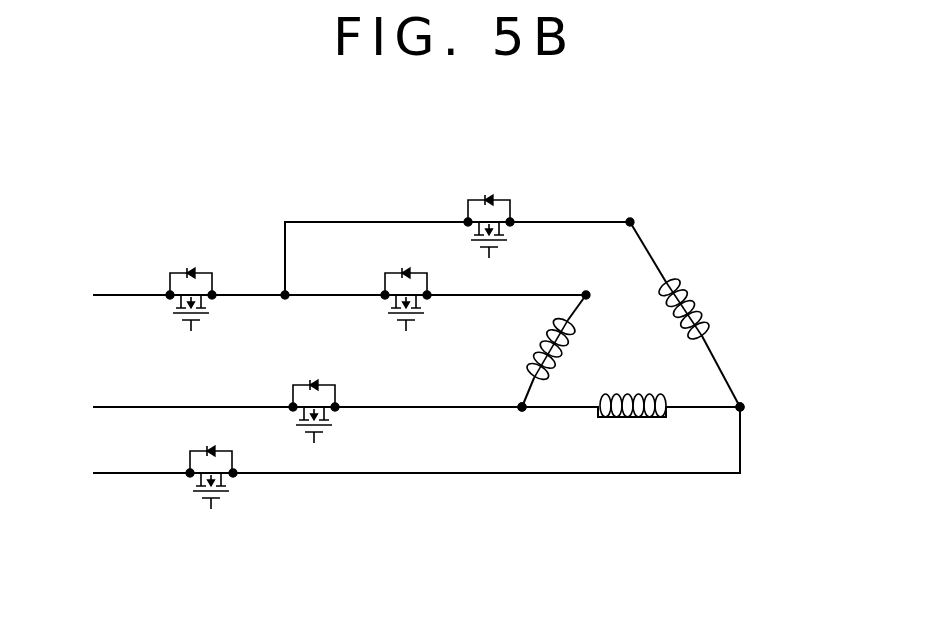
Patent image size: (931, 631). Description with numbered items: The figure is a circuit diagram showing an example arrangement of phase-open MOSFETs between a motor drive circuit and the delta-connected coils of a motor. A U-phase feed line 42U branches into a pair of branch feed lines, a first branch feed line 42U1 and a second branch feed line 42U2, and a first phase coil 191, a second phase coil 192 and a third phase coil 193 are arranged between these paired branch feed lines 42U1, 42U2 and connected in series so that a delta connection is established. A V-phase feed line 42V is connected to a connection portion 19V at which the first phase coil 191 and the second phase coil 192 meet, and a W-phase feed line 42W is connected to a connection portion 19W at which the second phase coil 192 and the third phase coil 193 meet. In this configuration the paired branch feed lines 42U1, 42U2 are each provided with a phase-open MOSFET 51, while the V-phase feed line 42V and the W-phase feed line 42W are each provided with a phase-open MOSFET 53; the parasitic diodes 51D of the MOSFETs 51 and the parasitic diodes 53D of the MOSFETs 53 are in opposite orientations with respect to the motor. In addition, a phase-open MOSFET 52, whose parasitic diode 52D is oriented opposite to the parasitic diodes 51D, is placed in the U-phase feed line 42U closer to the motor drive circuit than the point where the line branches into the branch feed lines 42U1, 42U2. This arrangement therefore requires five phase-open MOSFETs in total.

The U-phase feed line 42U is at (97, 293).
The first branch feed line 42U1 is at (312, 221).
The second branch feed line 42U2 is at (549, 297).
The V-phase feed line 42V is at (108, 405).
The W-phase feed line 42W is at (548, 475).
The phase-open MOSFETs 51 is at (483, 262).
The parasitic diodes 51D is at (414, 266).
The phase-open MOSFET 52 is at (168, 326).
The parasitic diode 52D is at (189, 263).
The phase-open MOSFETs 53 is at (308, 449).
The parasitic diodes 53D is at (215, 444).
The first phase coil 191 is at (574, 352).
The second phase coil 192 is at (634, 416).
The third phase coil 193 is at (697, 298).
The connection portion 19V is at (525, 406).
The connection portion 19W is at (741, 408).